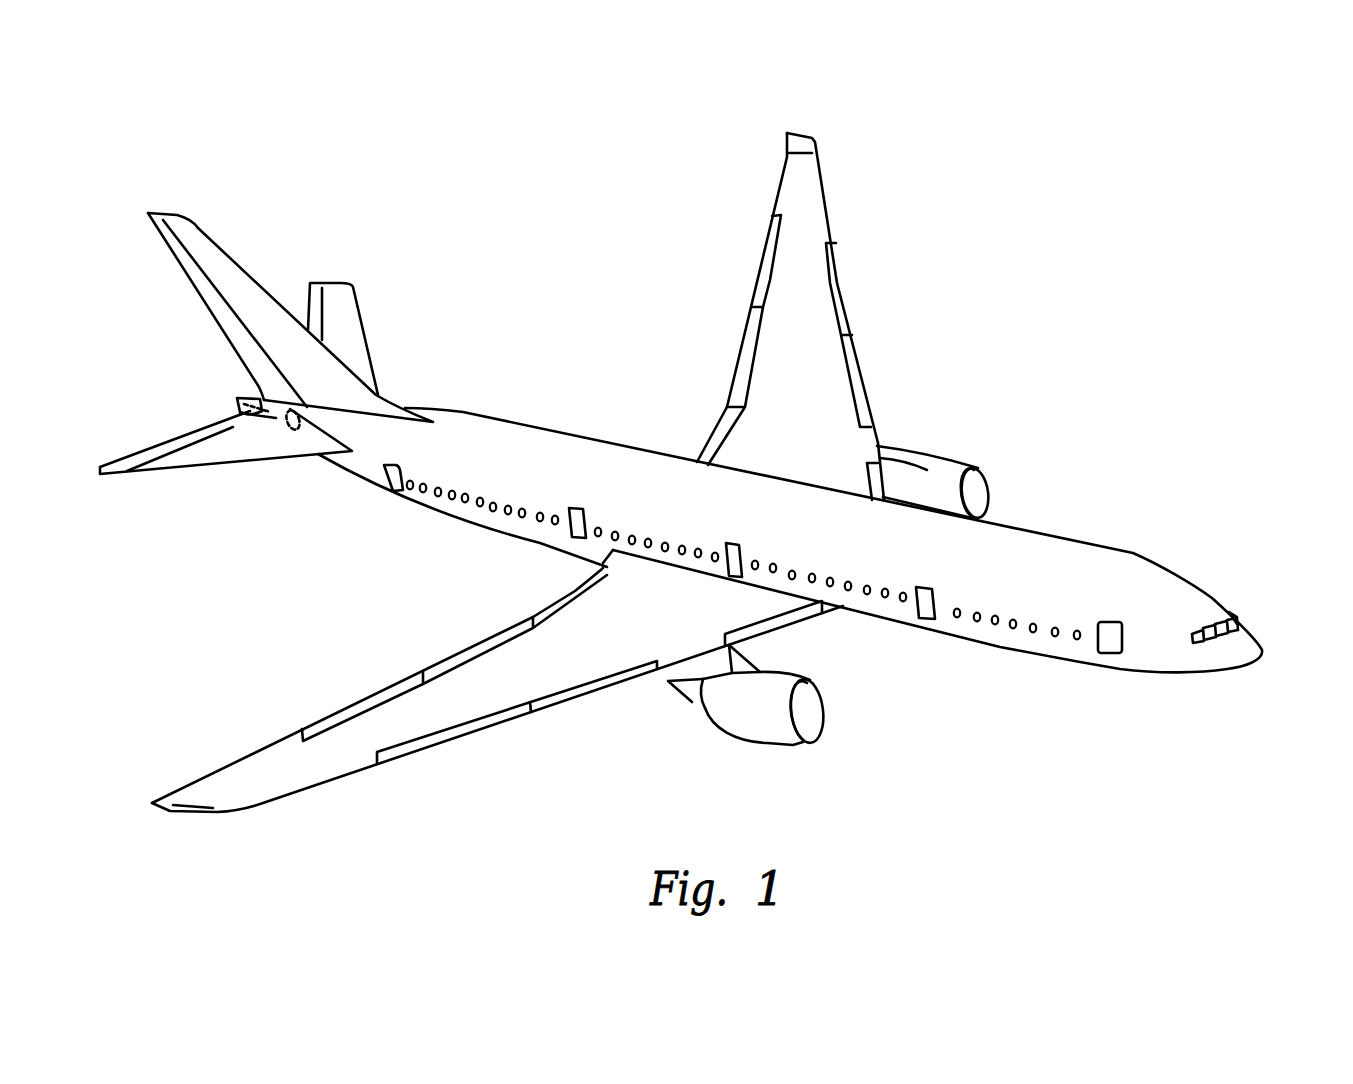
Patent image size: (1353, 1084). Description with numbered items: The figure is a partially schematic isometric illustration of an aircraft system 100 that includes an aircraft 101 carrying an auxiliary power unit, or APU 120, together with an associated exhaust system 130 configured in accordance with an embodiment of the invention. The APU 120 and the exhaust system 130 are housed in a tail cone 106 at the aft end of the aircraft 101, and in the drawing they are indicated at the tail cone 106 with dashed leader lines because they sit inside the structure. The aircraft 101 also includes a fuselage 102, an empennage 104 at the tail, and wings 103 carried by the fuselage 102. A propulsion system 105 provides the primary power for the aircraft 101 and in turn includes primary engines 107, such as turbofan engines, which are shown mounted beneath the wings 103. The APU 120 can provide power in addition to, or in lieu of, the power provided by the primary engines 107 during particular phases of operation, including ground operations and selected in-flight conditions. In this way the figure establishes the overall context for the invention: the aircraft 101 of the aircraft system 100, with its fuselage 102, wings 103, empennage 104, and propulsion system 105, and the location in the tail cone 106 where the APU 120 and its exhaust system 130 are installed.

The aircraft system 100 is at (466, 172).
The aircraft 101 is at (1236, 465).
The fuselage 102 is at (1038, 537).
The wings 103 is at (797, 370).
The empennage 104 is at (455, 408).
The propulsion system 105 is at (816, 742).
The tail cone 106 is at (240, 397).
The primary engines 107 is at (952, 466).
The auxiliary power unit (APU) 120 is at (291, 424).
The exhaust system 130 is at (247, 419).